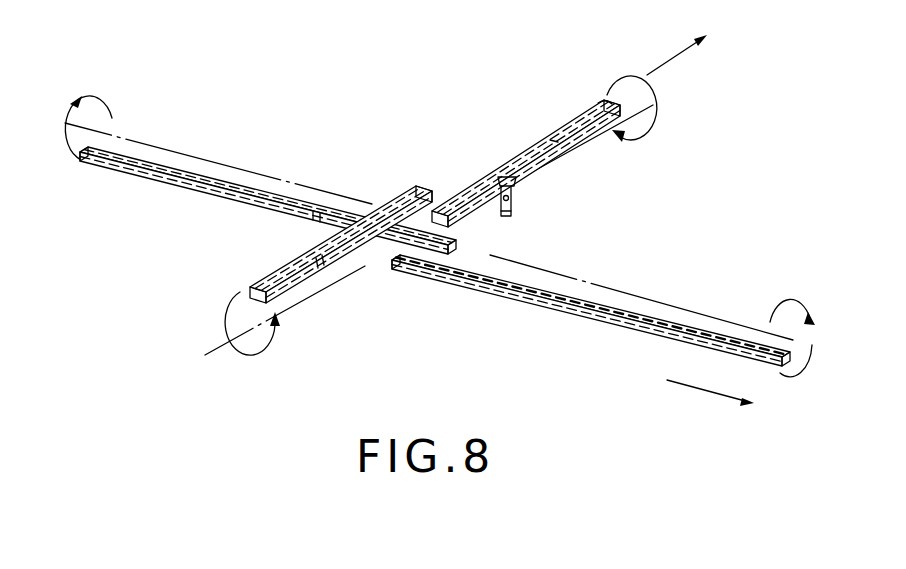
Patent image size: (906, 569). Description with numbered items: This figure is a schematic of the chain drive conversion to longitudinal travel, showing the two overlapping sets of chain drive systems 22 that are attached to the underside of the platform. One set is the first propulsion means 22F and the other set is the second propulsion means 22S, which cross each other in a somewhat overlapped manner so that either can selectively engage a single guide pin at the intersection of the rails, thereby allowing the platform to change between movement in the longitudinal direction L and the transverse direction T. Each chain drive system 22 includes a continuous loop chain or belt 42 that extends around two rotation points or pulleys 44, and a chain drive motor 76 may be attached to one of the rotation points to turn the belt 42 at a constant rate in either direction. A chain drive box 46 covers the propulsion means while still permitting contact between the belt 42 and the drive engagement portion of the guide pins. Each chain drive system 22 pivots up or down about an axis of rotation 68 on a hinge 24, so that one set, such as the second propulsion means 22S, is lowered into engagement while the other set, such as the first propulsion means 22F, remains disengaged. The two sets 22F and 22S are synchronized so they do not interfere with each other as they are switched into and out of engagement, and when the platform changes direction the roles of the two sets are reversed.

The chain drive system 22 is at (641, 312).
The second propulsion means 22S is at (241, 186).
The first propulsion means 22F is at (486, 190).
The hinge 24 is at (514, 201).
The continuous loop chain or belt 42 is at (552, 132).
The rotation points or pulleys 44 is at (474, 206).
The chain drive box 46 is at (554, 142).
The axis of rotation 68 is at (198, 152).
The chain drive motor 76 is at (601, 96).
The longitudinal direction L is at (677, 42).
The transverse direction T is at (711, 408).